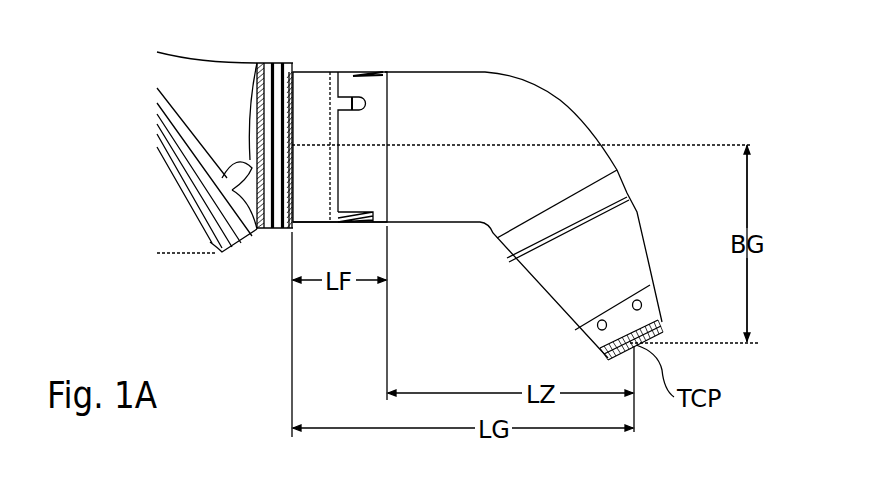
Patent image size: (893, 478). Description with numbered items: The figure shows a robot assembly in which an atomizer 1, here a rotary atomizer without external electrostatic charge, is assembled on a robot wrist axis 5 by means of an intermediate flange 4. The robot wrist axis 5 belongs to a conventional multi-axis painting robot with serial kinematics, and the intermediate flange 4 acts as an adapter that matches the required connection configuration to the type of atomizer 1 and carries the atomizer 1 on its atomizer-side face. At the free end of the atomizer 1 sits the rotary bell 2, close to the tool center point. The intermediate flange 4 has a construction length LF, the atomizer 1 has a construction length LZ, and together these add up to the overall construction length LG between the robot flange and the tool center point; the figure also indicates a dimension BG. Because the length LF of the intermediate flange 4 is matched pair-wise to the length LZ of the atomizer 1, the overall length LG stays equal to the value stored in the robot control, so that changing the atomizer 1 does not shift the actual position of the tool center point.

The atomizer 1 is at (622, 233).
The rotary bell 2 is at (660, 330).
The intermediate flange 4 is at (389, 58).
The robot wrist axis 5 is at (213, 242).